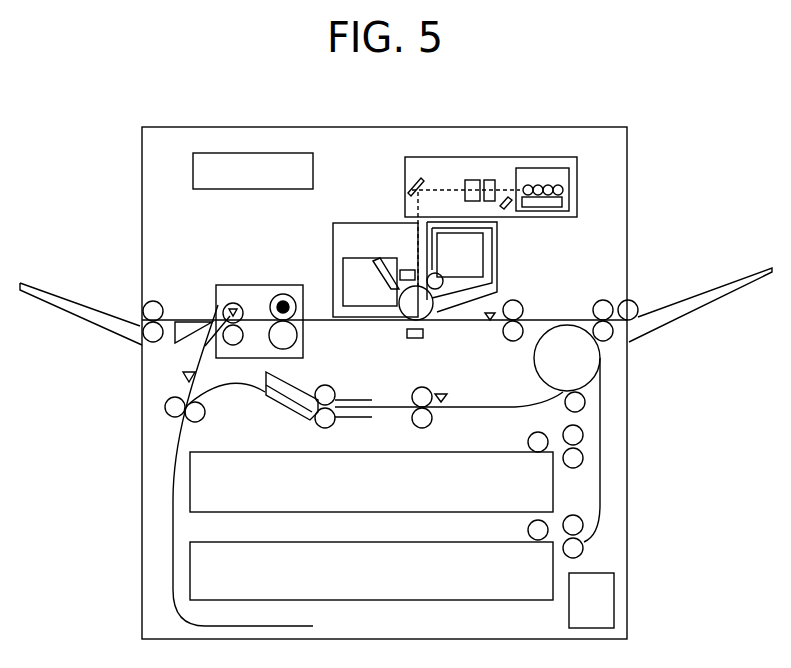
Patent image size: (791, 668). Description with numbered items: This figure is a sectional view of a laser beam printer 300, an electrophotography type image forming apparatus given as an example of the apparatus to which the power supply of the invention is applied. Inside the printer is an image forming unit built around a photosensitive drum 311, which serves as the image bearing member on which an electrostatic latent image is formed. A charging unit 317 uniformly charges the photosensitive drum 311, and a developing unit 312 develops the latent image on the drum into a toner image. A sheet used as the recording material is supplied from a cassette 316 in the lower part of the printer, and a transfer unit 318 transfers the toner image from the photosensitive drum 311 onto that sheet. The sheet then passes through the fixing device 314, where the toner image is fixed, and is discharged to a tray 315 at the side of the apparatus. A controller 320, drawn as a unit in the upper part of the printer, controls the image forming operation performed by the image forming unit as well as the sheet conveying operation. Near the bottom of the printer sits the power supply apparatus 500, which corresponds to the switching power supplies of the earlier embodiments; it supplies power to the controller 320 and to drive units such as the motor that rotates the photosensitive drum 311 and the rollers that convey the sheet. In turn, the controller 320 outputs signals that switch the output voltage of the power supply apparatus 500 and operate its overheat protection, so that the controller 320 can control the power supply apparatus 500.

The laser beam printer 300 is at (536, 126).
The controller 320 is at (233, 190).
The fixing device 314 is at (258, 284).
The charging unit 317 is at (401, 268).
The developing unit 312 is at (432, 278).
The photosensitive drum 311 is at (434, 300).
The transfer unit 318 is at (424, 334).
The tray 315 is at (70, 299).
The cassette 316 is at (537, 583).
The power supply apparatus 500 is at (569, 601).